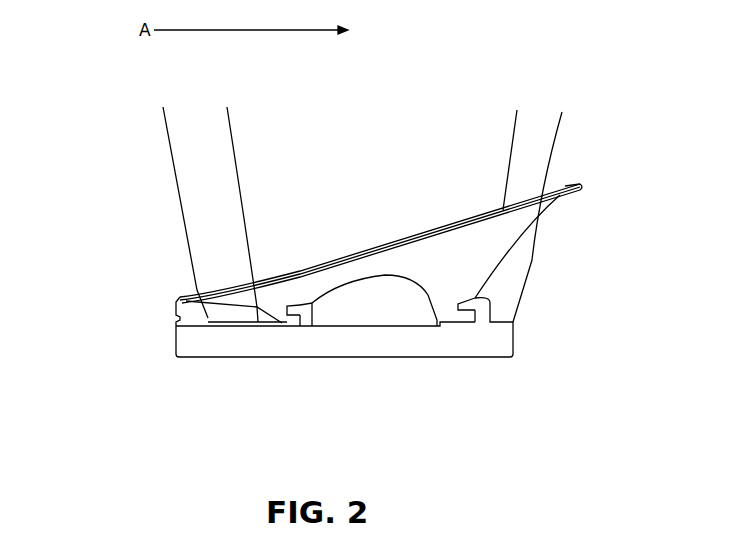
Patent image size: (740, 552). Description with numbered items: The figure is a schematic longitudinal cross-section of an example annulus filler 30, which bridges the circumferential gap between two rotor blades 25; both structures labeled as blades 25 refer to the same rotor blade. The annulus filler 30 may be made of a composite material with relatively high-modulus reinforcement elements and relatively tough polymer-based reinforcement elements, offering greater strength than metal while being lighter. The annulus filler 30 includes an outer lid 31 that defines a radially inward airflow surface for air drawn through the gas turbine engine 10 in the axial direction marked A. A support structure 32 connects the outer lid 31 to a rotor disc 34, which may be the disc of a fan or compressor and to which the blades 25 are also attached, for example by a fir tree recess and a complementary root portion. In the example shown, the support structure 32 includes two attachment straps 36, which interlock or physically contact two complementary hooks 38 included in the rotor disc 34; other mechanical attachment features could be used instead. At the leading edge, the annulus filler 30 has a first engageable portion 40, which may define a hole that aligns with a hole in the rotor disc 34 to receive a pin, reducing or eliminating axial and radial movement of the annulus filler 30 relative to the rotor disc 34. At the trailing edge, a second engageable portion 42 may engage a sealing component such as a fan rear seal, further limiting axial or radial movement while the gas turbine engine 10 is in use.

The gas turbine engine 10 is at (106, 171).
The rotor blades 25 is at (198, 153).
The annulus filler 30 is at (480, 216).
The outer lid 31 is at (294, 280).
The support structure 32 is at (226, 295).
The rotor disc 34 is at (247, 326).
The attachment straps 36 is at (276, 322).
The complementary hooks 38 is at (472, 299).
The first engageable portion 40 is at (173, 298).
The second engageable portion 42 is at (583, 186).